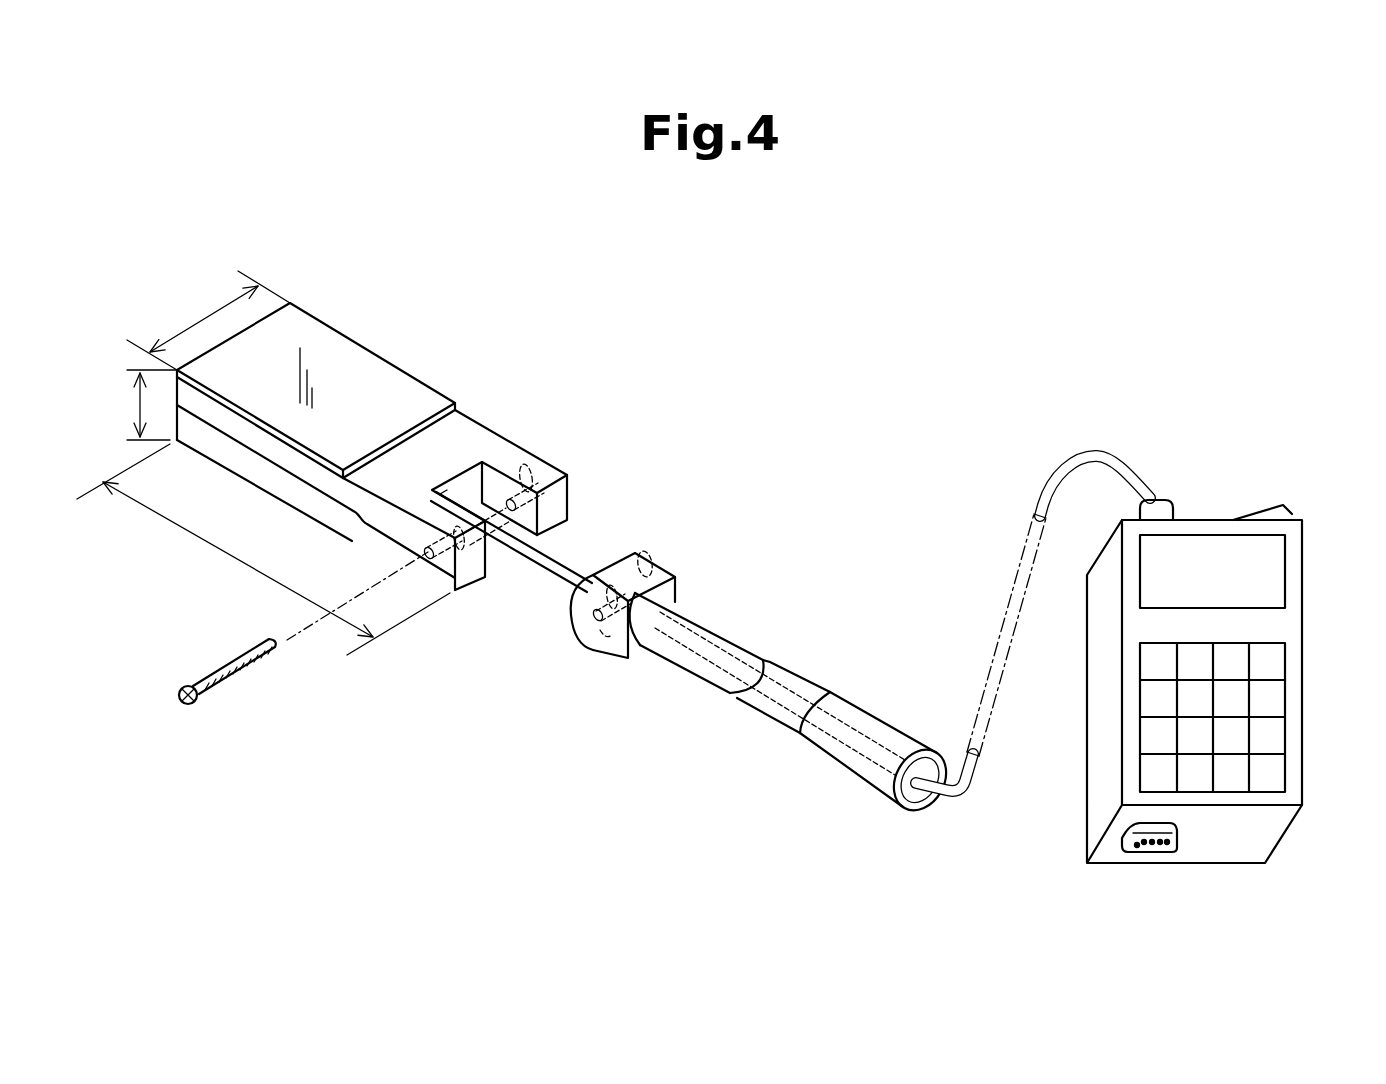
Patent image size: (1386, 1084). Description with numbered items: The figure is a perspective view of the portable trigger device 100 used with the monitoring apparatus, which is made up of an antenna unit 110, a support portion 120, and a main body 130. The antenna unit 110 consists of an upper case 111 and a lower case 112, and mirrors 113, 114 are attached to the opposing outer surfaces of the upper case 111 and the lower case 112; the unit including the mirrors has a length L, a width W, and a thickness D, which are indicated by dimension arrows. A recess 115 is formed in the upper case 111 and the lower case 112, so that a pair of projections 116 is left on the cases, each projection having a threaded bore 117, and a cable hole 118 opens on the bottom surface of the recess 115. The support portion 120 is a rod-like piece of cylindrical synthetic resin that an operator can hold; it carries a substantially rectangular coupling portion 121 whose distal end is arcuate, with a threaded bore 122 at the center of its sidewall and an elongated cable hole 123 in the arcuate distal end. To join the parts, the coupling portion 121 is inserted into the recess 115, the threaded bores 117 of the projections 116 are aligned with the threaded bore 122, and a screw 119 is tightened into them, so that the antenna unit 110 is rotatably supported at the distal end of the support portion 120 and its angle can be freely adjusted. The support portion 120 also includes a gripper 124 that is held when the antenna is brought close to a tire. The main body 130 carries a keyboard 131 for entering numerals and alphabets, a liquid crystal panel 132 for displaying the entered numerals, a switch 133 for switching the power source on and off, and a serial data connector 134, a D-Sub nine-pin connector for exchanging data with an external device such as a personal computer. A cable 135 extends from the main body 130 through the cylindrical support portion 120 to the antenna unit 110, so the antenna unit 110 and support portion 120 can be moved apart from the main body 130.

The trigger device 100 is at (1160, 255).
The antenna unit 110 is at (470, 426).
The upper case 111 is at (343, 470).
The lower case 112 is at (356, 528).
The mirror 113 is at (357, 345).
The mirror 114 is at (265, 488).
The recess 115 is at (447, 486).
The projections 116 is at (512, 448).
The threaded bore 117 is at (533, 480).
The cable hole 118 is at (459, 490).
The screw 119 is at (198, 703).
The support portion 120 is at (815, 649).
The coupling portion 121 is at (660, 563).
The threaded bore 122 is at (640, 560).
The cable hole 123 is at (590, 618).
The gripper 124 is at (903, 735).
The main body 130 is at (1231, 490).
The keyboard 131 is at (1296, 642).
The liquid crystal panel 132 is at (1282, 588).
The switch 133 is at (1273, 506).
The RS-232C connector 134 is at (1147, 853).
The cable 135 is at (553, 548).